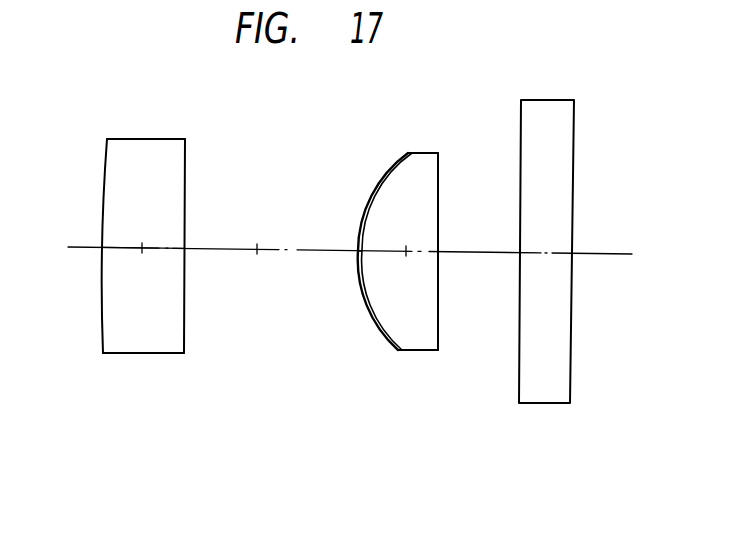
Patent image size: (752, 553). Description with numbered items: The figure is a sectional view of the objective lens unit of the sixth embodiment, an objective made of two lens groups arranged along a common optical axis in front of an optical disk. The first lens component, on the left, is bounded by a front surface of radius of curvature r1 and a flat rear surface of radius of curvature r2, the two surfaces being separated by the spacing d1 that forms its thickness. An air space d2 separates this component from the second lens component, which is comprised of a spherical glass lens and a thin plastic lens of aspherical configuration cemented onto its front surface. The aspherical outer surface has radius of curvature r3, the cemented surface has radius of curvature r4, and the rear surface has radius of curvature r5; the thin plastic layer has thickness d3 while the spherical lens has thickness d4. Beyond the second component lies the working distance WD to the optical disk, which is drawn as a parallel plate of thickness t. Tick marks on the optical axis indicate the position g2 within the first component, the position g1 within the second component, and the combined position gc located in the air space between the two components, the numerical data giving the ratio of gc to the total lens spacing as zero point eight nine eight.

The first lens surface spacing d1 is at (117, 247).
The second lens surface spacing d2 is at (233, 248).
The third lens surface spacing d3 is at (357, 250).
The fourth lens surface spacing d4 is at (385, 250).
The radius of curvature of first lens surface r1 is at (103, 350).
The radius of curvature of second lens surface r2 is at (183, 350).
The radius of curvature of third lens surface r3 is at (383, 335).
The radius of curvature of fourth lens surface r4 is at (402, 350).
The radius of curvature of fifth lens surface r5 is at (438, 350).
The g1 position of second lens component g1 is at (408, 264).
The g2 position of first lens component g2 is at (142, 262).
The gc combined position gc is at (260, 259).
The working distance WD is at (477, 250).
The thickness of optical disk t is at (560, 253).